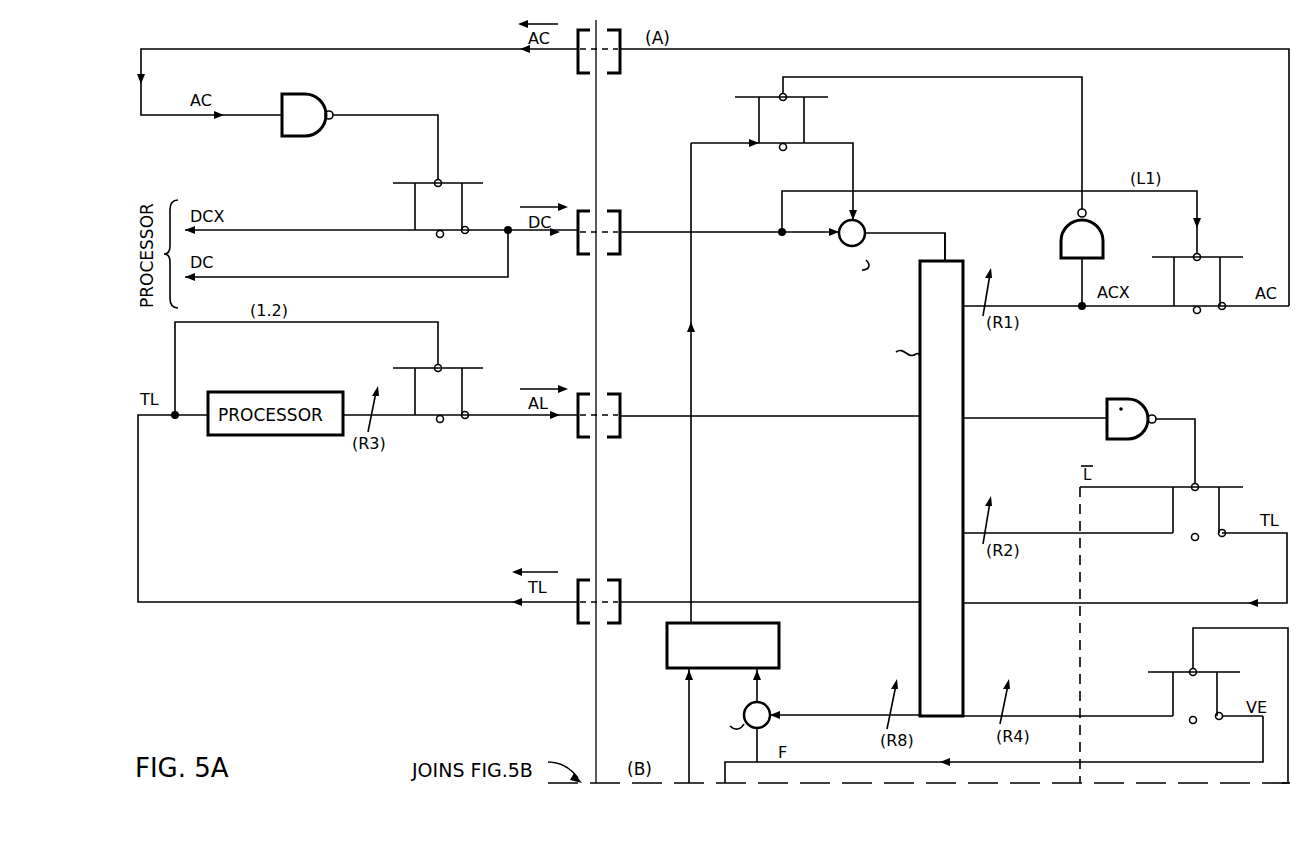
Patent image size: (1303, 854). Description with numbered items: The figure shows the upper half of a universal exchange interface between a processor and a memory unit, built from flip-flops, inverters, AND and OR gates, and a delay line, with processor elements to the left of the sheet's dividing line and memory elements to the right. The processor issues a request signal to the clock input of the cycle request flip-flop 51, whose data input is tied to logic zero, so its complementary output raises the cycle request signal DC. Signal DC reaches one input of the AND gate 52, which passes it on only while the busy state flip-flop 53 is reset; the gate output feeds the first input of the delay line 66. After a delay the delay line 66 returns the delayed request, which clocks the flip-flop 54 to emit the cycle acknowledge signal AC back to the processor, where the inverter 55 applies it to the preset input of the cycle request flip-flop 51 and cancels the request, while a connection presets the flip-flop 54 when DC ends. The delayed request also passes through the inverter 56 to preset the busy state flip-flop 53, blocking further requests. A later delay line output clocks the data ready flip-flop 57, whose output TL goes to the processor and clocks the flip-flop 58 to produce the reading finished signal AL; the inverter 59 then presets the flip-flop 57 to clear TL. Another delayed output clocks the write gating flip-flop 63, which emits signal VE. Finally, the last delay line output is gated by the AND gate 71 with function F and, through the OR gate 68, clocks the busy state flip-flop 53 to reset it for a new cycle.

The cycle request flip-flop 51 is at (452, 233).
The AND gate 52 is at (840, 229).
The busy state flip-flop 53 is at (797, 146).
The cycle acknowledge flip-flop 54 is at (1185, 307).
The inverter 55 is at (302, 138).
The inverter 56 is at (1061, 240).
The data ready flip-flop 57 is at (1184, 535).
The reading finished flip-flop 58 is at (452, 418).
The inverter 59 is at (1130, 396).
The write gating flip-flop 63 is at (1182, 718).
The delay line 66 is at (963, 352).
The OR gate 68 is at (772, 644).
The AND gate 71 is at (744, 705).